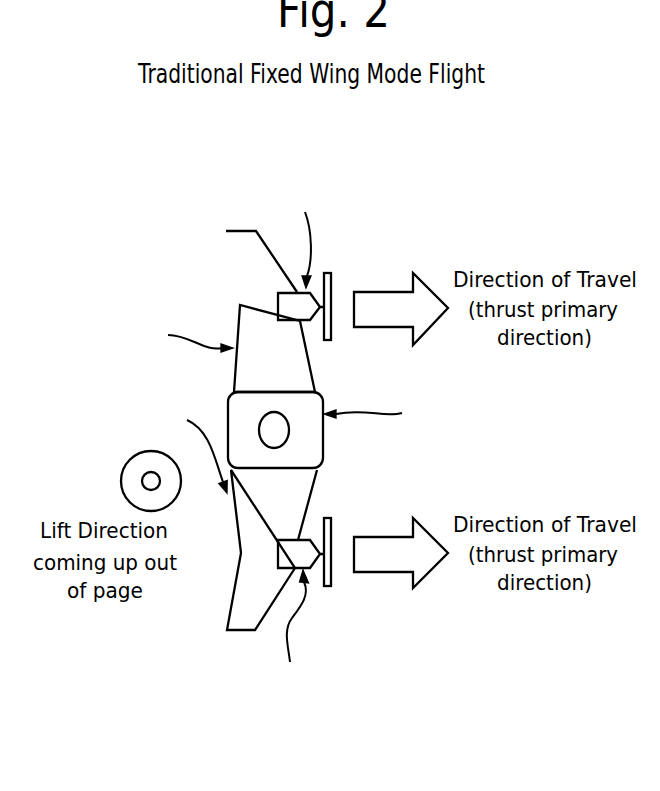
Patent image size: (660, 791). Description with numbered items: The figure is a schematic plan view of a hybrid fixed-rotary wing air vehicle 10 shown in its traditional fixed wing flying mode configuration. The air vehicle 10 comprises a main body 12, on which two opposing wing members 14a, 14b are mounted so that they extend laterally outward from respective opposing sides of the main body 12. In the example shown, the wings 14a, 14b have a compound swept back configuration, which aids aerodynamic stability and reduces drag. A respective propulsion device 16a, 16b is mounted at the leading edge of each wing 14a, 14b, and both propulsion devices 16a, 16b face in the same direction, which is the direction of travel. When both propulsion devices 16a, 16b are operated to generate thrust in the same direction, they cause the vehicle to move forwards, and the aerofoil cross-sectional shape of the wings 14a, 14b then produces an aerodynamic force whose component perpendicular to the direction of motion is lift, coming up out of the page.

The air vehicle 10 is at (189, 255).
The main body 12 is at (307, 447).
The wing member 14a is at (298, 368).
The wing member 14b is at (287, 497).
The propulsion device 16a is at (328, 287).
The propulsion device 16b is at (332, 578).